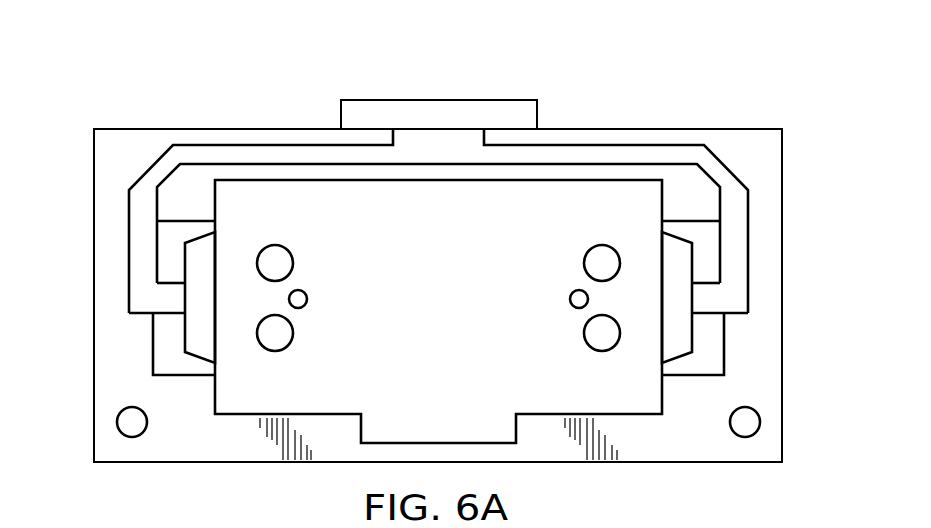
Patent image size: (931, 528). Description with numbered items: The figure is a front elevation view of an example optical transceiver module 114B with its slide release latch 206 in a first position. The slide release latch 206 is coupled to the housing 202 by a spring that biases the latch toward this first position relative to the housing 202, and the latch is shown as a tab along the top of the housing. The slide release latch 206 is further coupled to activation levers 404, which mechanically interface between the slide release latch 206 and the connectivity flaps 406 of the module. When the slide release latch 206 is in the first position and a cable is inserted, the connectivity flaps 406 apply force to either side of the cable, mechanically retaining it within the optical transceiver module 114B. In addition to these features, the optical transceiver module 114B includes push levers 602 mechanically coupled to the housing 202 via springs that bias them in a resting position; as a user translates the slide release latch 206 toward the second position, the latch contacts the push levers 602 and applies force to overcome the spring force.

The optical transceiver module 114B is at (136, 64).
The housing 202 is at (267, 128).
The slide release latch 206 is at (437, 100).
The activation levers 404 is at (129, 231).
The connectivity flaps 406 is at (215, 363).
The push levers 602 is at (117, 422).